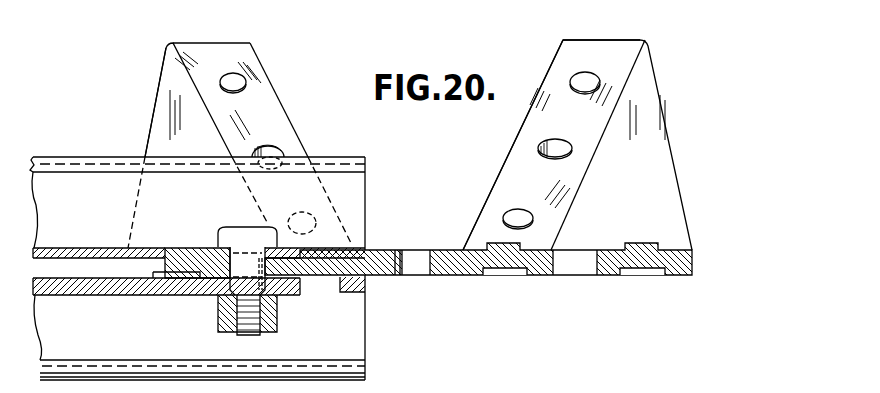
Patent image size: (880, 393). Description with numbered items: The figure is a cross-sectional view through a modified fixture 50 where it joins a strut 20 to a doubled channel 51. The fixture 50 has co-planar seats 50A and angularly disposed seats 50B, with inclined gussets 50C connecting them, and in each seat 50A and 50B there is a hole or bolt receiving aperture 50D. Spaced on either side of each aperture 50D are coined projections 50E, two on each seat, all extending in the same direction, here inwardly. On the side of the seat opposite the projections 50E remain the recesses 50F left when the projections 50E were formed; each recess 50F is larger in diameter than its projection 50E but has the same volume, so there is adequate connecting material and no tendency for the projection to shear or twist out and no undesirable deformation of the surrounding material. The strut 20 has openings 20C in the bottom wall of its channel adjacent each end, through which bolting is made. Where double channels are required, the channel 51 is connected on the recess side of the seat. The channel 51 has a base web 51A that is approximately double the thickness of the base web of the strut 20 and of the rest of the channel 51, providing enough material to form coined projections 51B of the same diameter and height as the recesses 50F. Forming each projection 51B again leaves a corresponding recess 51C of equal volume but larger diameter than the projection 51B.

The strut 20 is at (92, 155).
The opening 20C is at (170, 248).
The modified fixture 50 is at (716, 156).
The co-planar seat 50A is at (688, 250).
The angularly disposed seat 50B is at (255, 52).
The inclined gusset 50C is at (163, 75).
The bolt receiving aperture 50D is at (272, 147).
The coined projection 50E is at (592, 82).
The recess 50F is at (645, 272).
The channel 51 is at (228, 230).
The base web 51A is at (366, 287).
The coined projection 51B is at (128, 270).
The recess 51C is at (300, 290).